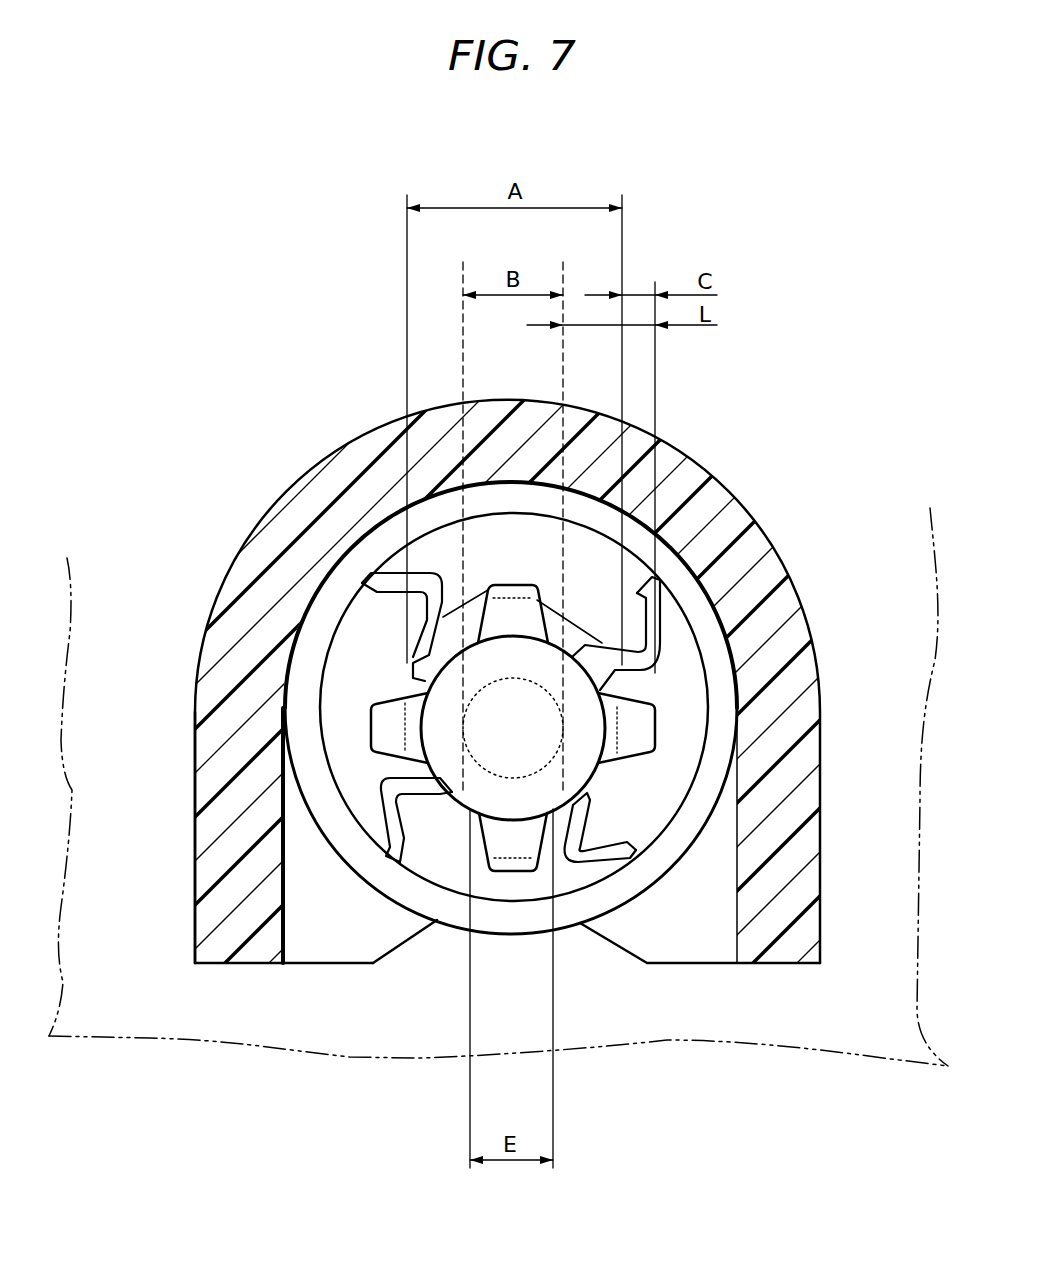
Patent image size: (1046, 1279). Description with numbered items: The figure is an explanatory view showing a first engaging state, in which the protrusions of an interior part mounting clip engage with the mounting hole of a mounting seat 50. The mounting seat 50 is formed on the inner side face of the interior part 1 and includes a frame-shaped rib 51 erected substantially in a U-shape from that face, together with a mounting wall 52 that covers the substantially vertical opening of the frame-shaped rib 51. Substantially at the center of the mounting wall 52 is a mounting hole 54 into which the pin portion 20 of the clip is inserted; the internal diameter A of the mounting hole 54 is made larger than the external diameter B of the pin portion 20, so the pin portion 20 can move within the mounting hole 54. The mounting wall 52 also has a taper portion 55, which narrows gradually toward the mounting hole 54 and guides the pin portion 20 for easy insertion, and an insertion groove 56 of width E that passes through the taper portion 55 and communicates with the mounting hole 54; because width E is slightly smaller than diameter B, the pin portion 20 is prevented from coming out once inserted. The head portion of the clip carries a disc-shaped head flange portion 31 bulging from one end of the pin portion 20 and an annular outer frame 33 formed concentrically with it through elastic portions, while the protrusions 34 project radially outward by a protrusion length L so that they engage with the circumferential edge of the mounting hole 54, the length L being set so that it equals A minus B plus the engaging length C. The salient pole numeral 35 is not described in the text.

The interior part 1 is at (157, 1038).
The pin portion 20 is at (527, 752).
The head flange portion 31 is at (545, 798).
The annular outer frame 33 is at (643, 893).
The protrusions 34 is at (337, 855).
The salient pole 35 is at (516, 583).
The mounting seat 50 is at (272, 466).
The frame-shaped rib 51 is at (193, 710).
The mounting wall 52 is at (303, 947).
The mounting hole 54 is at (410, 682).
The taper portion 55 is at (400, 933).
The insertion groove 56 is at (532, 927).